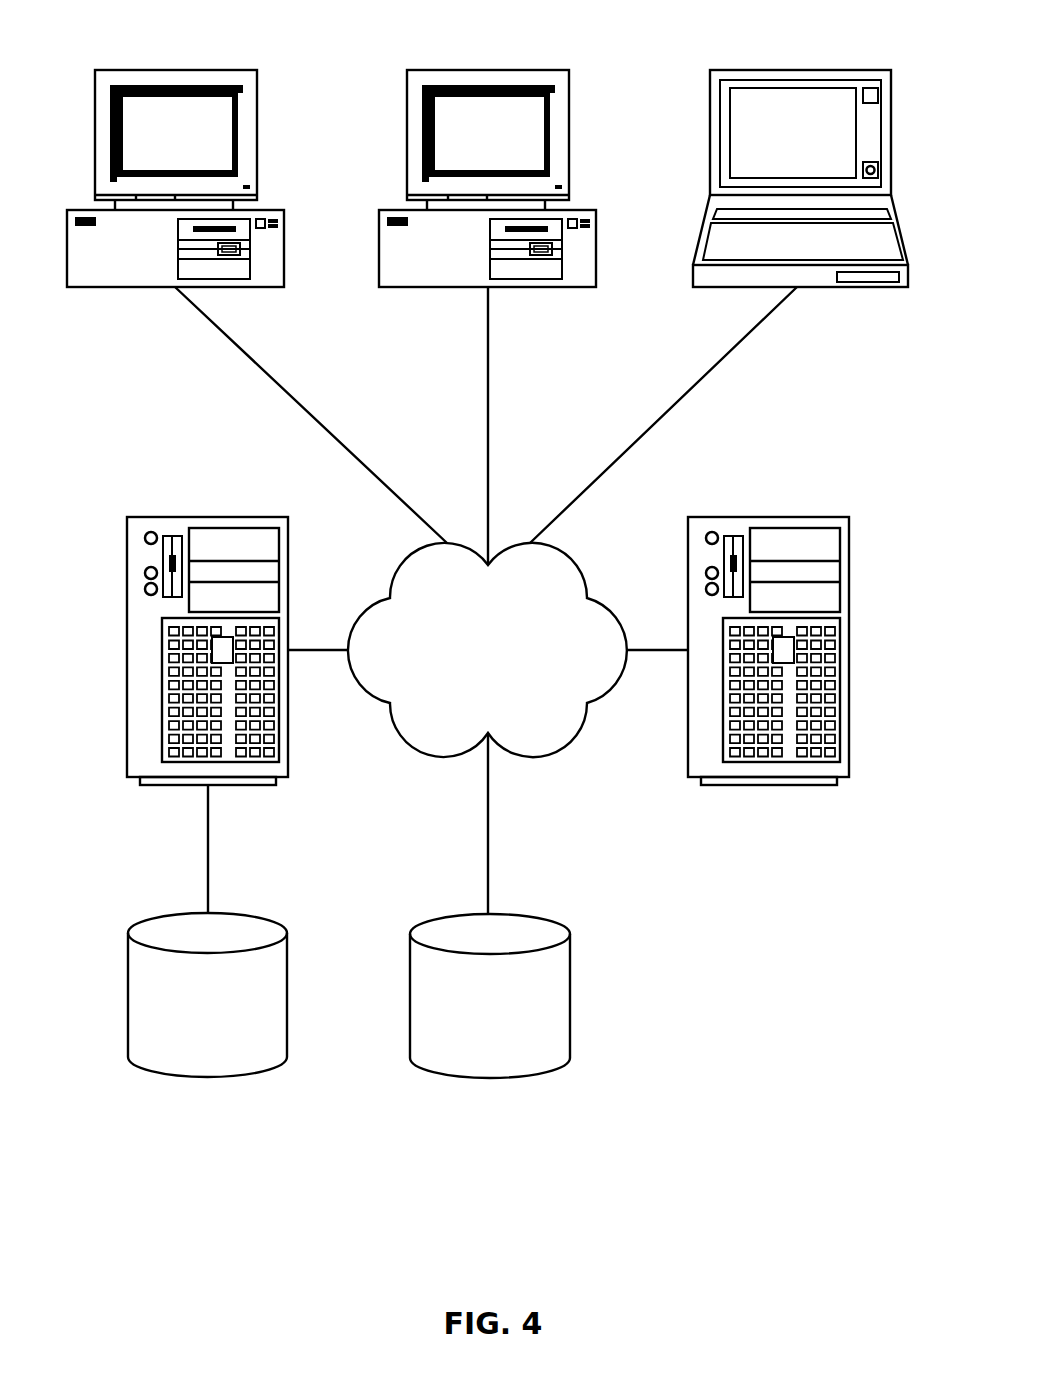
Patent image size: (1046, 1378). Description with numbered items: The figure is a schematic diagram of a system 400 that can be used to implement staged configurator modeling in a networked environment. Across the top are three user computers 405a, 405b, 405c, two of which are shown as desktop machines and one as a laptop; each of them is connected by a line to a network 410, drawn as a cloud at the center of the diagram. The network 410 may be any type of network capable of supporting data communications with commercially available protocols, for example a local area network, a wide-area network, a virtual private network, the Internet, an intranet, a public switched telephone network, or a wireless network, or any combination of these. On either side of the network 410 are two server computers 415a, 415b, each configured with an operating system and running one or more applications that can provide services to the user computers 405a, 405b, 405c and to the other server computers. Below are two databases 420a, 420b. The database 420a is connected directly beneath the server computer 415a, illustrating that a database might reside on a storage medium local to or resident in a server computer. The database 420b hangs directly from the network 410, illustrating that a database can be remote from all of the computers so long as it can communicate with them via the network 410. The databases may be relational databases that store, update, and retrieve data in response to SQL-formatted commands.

The system 400 is at (764, 1135).
The user computer 405a is at (284, 232).
The user computer 405b is at (380, 231).
The user computer 405c is at (710, 178).
The network 410 is at (525, 758).
The server computer 415a is at (127, 650).
The server computer 415b is at (849, 650).
The database 420a is at (207, 1077).
The database 420b is at (487, 1078).